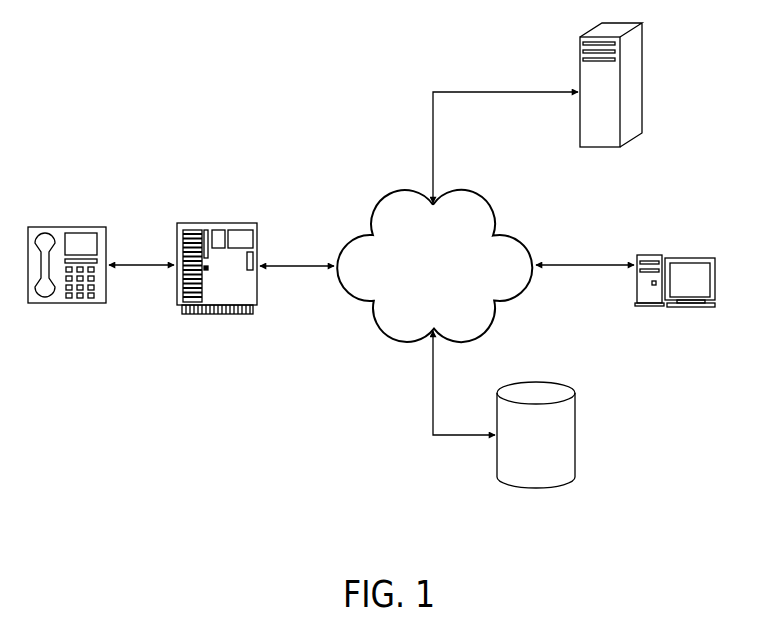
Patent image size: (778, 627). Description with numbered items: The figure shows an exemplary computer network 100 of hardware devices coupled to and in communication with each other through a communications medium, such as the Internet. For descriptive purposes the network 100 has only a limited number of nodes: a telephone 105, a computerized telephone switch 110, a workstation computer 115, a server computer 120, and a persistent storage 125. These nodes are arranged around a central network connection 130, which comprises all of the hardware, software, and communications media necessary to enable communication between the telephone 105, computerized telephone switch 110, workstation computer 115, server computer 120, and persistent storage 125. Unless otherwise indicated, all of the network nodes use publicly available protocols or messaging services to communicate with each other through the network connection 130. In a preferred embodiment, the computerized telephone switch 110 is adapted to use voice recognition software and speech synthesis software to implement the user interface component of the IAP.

The network 100 is at (335, 159).
The telephone 105 is at (67, 225).
The computerized telephone switch 110 is at (217, 223).
The workstation computer 115 is at (693, 257).
The server computer 120 is at (642, 82).
The persistent storage 125 is at (575, 430).
The network connection 130 is at (452, 280).